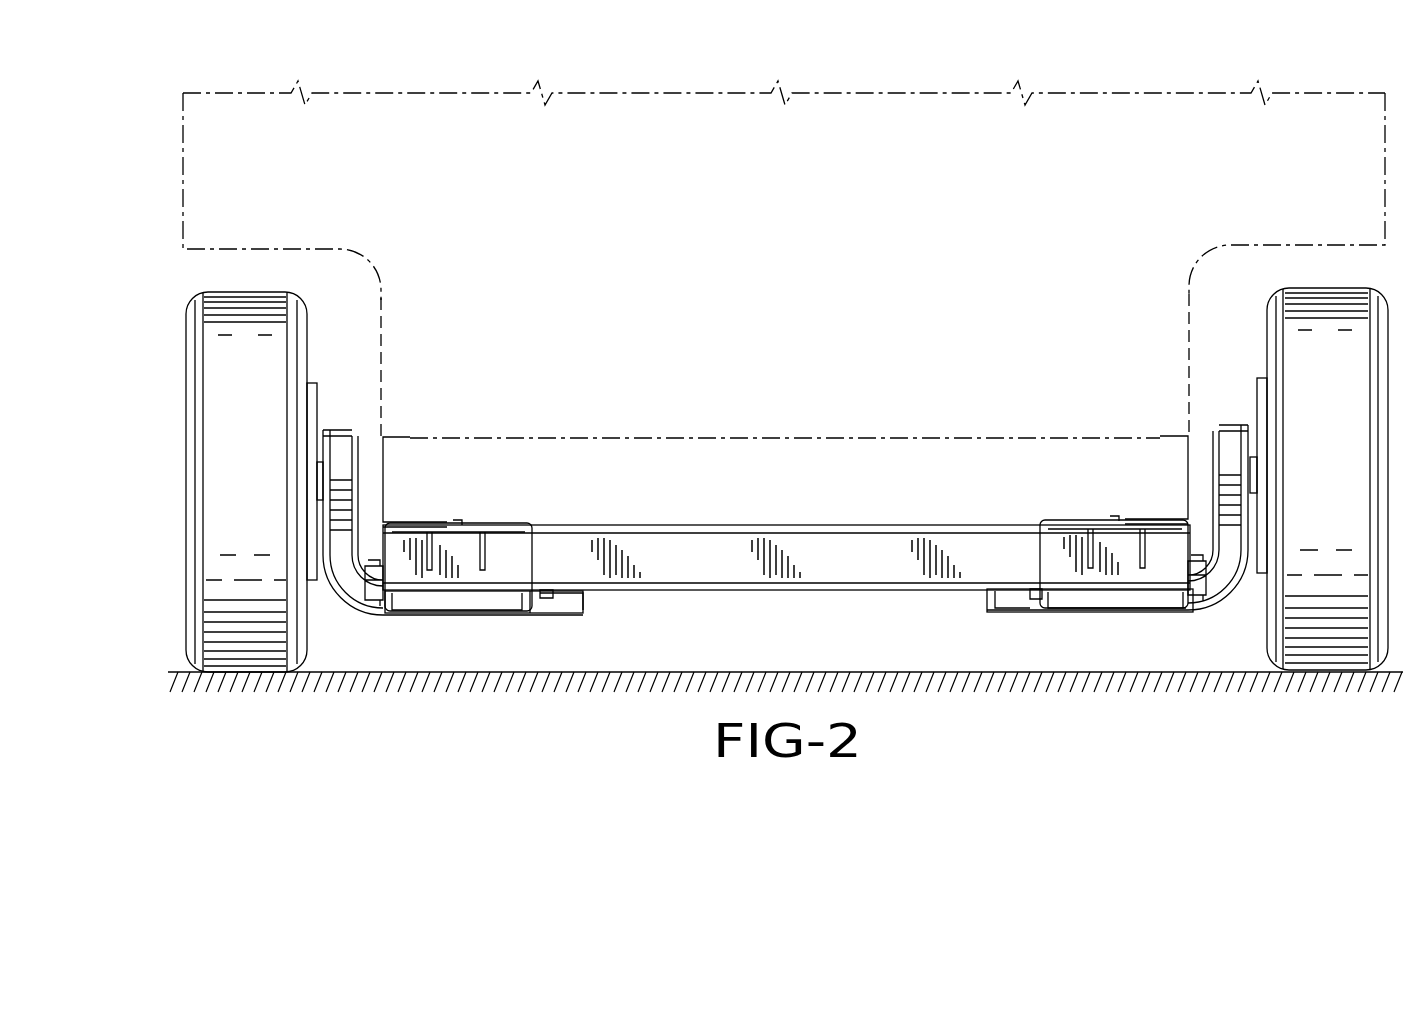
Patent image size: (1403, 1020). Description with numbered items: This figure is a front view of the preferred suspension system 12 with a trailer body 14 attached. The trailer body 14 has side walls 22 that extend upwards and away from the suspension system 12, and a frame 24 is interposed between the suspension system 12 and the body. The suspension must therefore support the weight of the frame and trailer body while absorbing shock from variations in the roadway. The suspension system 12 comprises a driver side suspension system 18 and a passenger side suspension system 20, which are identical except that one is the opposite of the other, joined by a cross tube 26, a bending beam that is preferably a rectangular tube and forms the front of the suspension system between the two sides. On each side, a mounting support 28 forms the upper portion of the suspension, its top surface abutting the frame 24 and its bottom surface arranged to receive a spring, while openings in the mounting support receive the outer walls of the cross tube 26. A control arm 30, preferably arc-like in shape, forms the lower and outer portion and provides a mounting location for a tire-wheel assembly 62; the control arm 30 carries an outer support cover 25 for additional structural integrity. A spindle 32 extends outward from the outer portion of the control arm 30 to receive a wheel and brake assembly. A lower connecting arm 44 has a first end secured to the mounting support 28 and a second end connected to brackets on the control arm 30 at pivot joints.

The suspension system 12 is at (788, 544).
The trailer body 14 is at (260, 98).
The driver side suspension system 18 is at (1055, 570).
The passenger side suspension system 20 is at (563, 620).
The side walls 22 is at (380, 378).
The frame 24 is at (396, 437).
The outer support cover 25 is at (1083, 615).
The cross tube 26 is at (742, 566).
The mounting support 28 is at (1073, 522).
The control arm 30 is at (1222, 580).
The spindle 32 is at (1254, 473).
The lower connecting arm 44 is at (1108, 598).
The tire-wheel assembly 62 is at (266, 443).